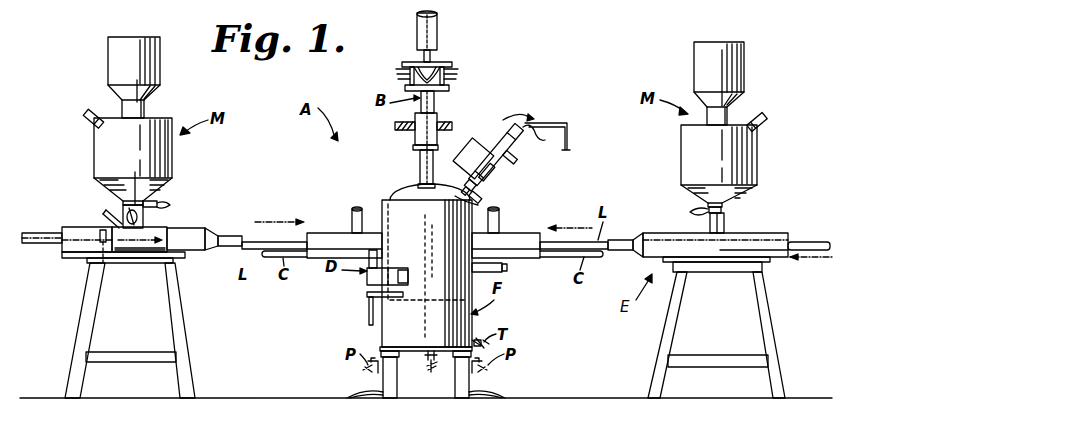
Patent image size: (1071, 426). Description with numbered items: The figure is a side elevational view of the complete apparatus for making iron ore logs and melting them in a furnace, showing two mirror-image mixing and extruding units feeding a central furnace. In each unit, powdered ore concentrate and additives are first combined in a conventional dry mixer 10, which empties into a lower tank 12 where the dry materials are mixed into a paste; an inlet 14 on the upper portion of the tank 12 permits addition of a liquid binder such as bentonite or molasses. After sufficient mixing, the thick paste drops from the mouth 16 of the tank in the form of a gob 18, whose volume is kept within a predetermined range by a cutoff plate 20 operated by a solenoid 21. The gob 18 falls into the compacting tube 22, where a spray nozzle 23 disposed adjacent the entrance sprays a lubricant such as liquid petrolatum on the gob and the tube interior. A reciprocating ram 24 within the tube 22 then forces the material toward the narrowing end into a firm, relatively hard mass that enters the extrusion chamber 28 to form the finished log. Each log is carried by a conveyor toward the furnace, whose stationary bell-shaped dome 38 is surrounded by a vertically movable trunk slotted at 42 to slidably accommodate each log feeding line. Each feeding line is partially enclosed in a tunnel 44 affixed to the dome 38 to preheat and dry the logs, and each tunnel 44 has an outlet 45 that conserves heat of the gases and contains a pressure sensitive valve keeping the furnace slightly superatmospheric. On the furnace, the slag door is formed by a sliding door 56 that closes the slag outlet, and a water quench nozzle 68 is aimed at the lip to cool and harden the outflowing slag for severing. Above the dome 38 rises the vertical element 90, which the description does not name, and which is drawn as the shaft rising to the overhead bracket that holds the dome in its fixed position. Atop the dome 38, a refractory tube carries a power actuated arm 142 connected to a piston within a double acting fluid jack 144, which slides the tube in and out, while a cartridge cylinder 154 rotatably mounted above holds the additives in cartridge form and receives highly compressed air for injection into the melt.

The dry mixer 10 is at (160, 68).
The lower tank 12 is at (172, 156).
The inlet 14 is at (91, 122).
The mouth 16 is at (122, 204).
The gob 18 is at (144, 215).
The cutoff plate 20 is at (131, 181).
The solenoid 21 is at (157, 203).
The compacting tube 22 is at (192, 228).
The spray nozzle 23 is at (105, 222).
The reciprocating ram 24 is at (103, 262).
The extrusion chamber 28 is at (228, 236).
The dome 38 is at (405, 190).
The slot 42 is at (478, 205).
The tunnel 44 is at (318, 233).
The outlet 45 is at (352, 210).
The sliding door 56 is at (367, 280).
The water quench nozzle 68 is at (366, 295).
The shaft 90 is at (420, 160).
The power actuated arm 142 is at (490, 184).
The double acting fluid jack 144 is at (512, 148).
The cartridge cylinder 154 is at (463, 158).